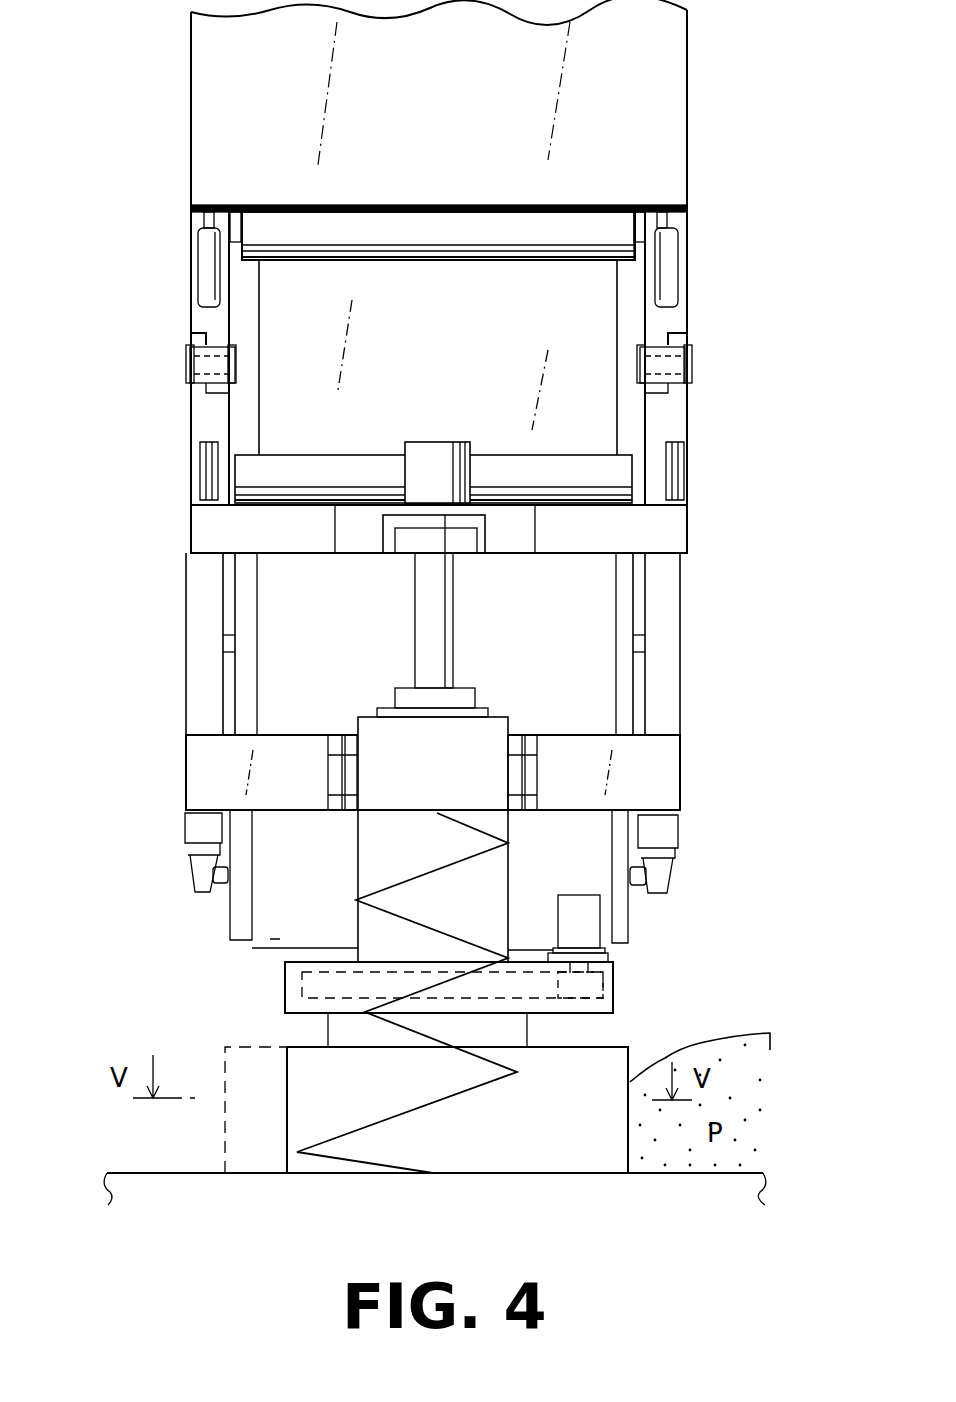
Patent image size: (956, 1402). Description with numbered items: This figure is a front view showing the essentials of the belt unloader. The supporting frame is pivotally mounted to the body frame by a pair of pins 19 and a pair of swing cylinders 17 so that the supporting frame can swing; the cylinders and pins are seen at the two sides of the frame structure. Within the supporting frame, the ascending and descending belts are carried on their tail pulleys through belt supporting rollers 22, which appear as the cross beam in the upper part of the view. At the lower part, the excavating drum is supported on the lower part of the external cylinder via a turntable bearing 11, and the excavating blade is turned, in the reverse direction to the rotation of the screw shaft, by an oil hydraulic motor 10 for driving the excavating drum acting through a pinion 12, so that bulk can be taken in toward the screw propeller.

The oil hydraulic motor for driving the excavating drum 10 is at (602, 918).
The turntable bearing 11 is at (290, 980).
The pinion 12 is at (613, 982).
The swing cylinder 17 is at (200, 272).
The pin 19 is at (188, 362).
The belt supporting roller 22 is at (490, 262).